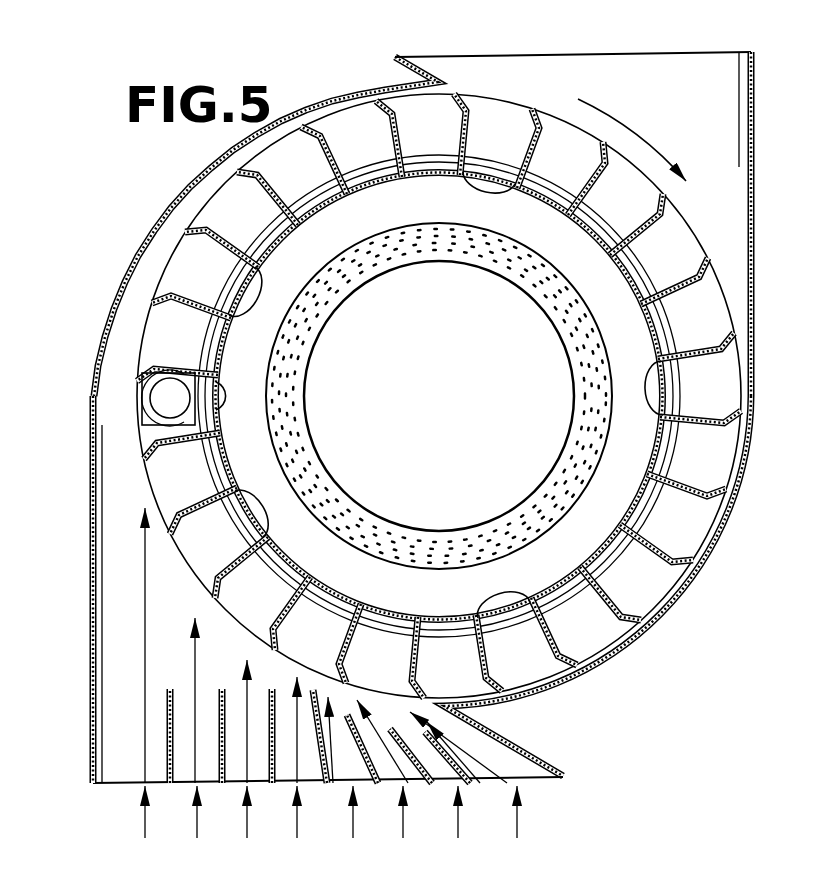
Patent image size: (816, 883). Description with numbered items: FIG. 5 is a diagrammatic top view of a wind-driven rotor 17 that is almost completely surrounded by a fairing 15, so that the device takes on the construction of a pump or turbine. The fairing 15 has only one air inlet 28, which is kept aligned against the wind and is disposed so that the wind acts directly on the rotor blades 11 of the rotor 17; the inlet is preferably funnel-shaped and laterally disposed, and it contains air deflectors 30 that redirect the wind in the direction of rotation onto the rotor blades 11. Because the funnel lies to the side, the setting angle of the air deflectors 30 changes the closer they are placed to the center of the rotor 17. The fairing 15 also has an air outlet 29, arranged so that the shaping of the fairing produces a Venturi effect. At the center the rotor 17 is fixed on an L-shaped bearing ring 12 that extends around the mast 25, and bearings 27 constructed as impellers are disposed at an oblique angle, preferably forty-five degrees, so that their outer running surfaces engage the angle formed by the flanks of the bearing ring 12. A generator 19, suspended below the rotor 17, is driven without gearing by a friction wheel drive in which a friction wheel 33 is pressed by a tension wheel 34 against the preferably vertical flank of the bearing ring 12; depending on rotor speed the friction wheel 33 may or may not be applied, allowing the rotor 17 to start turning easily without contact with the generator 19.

The rotor blades 11 is at (205, 536).
The bearing ring 12 is at (222, 279).
The fairing 15 is at (90, 576).
The rotor 17 is at (148, 320).
The generator 19 is at (148, 426).
The mast 25 is at (597, 436).
The bearings 27 is at (258, 266).
The air inlet 28 is at (313, 767).
The air outlet 29 is at (647, 76).
The air deflectors 30 is at (270, 758).
The friction wheel 33 is at (165, 400).
The tension wheel 34 is at (226, 396).